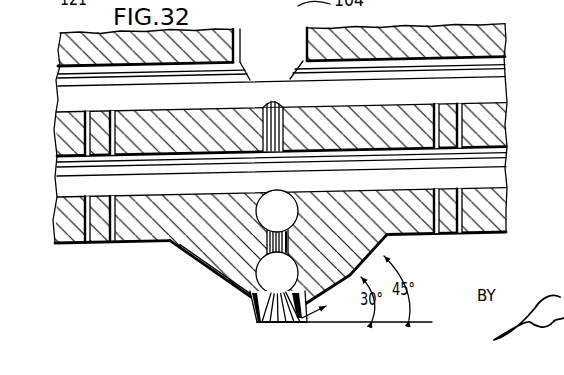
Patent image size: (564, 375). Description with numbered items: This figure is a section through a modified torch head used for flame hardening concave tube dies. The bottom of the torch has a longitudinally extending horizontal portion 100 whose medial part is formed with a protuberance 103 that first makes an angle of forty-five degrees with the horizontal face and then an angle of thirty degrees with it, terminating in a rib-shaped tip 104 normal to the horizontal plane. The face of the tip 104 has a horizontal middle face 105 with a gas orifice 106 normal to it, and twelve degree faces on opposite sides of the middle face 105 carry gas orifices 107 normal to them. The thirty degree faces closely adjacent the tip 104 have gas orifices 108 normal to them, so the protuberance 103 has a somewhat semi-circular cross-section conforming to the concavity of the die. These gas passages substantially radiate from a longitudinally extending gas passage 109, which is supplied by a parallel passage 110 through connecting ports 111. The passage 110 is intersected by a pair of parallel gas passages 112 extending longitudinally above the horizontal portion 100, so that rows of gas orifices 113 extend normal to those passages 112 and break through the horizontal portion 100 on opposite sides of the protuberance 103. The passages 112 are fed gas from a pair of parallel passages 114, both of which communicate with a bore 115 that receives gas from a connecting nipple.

The longitudinally extending horizontal portion 100 is at (489, 233).
The protuberance 103 is at (170, 246).
The rib-shaped tip 104 is at (256, 313).
The horizontal middle face 105 is at (322, 322).
The gas orifice 106 is at (279, 323).
The gas orifices 107 is at (258, 323).
The gas orifices 108 is at (250, 306).
The longitudinally extending gas passage 109 is at (261, 259).
The parallel passage 110 is at (278, 200).
The connecting ports 111 is at (288, 247).
The parallel gas passages 112 is at (495, 173).
The gas orifices 113 is at (105, 242).
The parallel passages 114 is at (485, 92).
The bore 115 is at (268, 40).